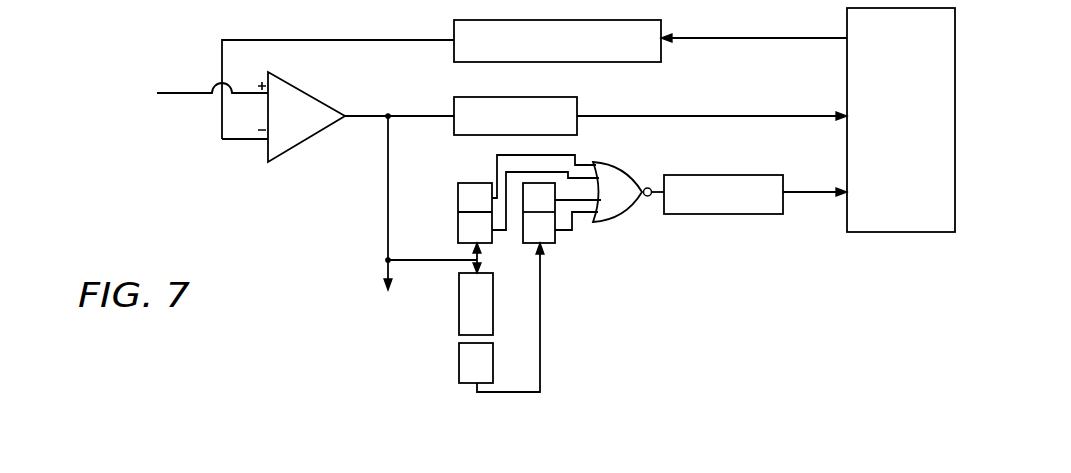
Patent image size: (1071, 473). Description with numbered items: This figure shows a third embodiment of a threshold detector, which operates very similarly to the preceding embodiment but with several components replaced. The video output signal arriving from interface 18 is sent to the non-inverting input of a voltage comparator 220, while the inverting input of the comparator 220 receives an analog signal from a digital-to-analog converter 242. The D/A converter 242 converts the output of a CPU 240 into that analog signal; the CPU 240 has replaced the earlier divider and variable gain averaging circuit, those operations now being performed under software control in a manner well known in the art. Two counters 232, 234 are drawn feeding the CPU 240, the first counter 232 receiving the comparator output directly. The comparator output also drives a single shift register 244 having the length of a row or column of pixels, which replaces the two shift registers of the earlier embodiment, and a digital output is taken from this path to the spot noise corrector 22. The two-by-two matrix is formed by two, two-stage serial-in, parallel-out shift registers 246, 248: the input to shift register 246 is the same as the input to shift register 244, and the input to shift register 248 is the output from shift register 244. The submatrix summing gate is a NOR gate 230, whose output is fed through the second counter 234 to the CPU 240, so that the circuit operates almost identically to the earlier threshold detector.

The interface 18 is at (147, 111).
The spot noise corrector 22 is at (344, 323).
The voltage comparator 220 is at (316, 126).
The NOR gate 230 is at (624, 222).
The counter 232 is at (579, 135).
The counter 234 is at (773, 175).
The CPU 240 is at (924, 176).
The digital-to-analog converter 242 is at (646, 62).
The shift register 244 is at (459, 372).
The shift register 246 is at (460, 190).
The shift register 248 is at (541, 245).